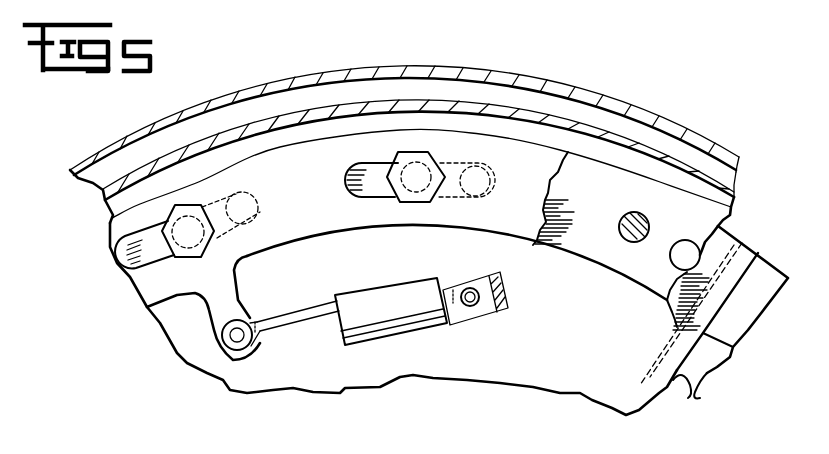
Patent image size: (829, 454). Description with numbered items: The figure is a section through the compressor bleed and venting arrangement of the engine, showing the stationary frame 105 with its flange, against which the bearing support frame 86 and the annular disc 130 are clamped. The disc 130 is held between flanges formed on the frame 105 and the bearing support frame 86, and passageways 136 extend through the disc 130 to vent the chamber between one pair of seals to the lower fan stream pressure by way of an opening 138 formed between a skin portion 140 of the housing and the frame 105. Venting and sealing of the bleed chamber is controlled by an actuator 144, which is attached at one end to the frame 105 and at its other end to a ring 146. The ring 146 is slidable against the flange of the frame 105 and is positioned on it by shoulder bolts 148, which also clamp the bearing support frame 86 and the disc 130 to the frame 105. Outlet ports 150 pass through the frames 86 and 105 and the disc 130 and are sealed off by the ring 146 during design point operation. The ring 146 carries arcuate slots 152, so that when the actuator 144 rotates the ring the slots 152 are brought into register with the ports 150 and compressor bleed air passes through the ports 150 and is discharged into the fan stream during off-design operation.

The bearing support frame 86 is at (716, 372).
The stationary frame 105 is at (627, 138).
The annular disc 130 is at (692, 397).
The passageways 136 is at (649, 363).
The opening 138 is at (726, 183).
The skin portion 140 is at (697, 132).
The actuator 144 is at (392, 285).
The ring 146 is at (547, 188).
The shoulder bolt 148 is at (192, 207).
The outlet port 150 is at (475, 197).
The arcuate slot 152 is at (356, 166).